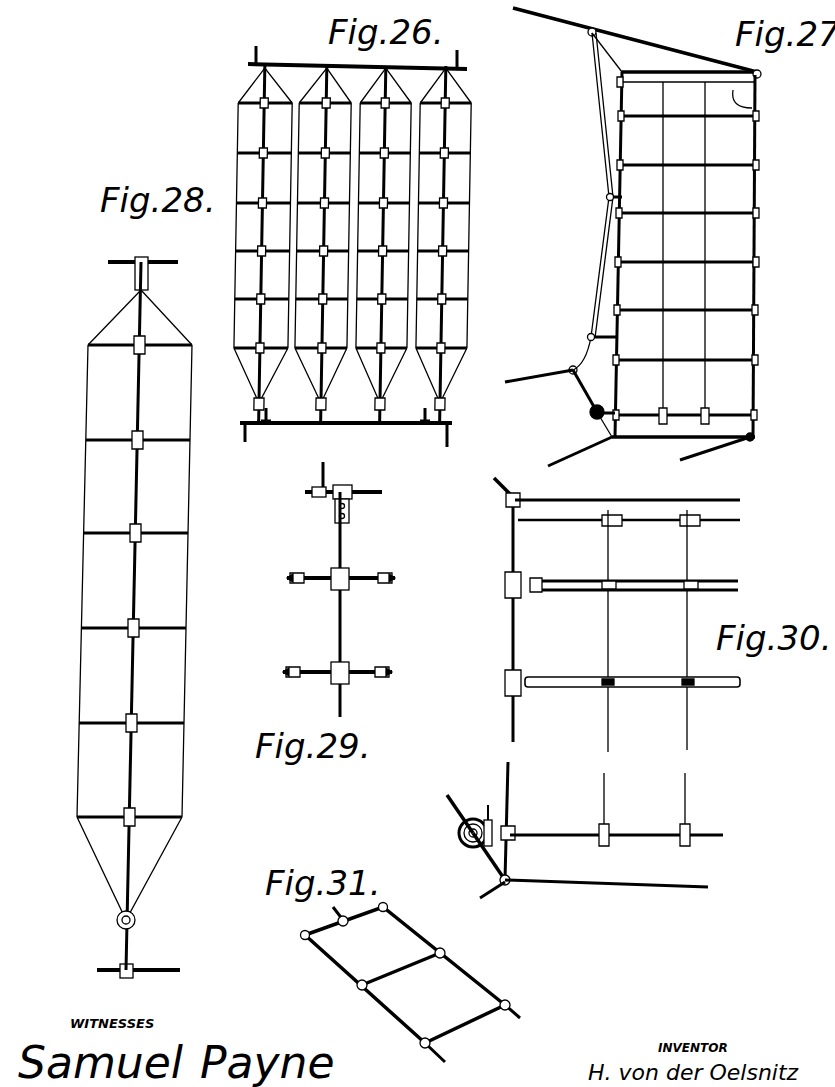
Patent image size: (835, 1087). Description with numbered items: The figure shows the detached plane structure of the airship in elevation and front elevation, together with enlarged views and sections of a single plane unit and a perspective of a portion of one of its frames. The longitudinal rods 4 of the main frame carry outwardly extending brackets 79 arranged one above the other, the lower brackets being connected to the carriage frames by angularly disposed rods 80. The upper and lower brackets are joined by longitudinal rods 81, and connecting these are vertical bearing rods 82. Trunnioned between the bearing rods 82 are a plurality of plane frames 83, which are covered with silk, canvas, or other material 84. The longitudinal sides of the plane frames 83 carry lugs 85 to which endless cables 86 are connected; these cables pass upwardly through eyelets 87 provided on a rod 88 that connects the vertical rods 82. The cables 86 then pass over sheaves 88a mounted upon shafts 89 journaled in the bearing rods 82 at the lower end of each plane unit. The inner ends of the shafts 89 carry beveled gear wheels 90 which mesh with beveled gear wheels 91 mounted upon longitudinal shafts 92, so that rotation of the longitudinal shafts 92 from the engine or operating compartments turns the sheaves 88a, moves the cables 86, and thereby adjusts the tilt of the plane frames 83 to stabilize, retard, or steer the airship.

In FIG. 27, the longitudinal rod 4 is at (588, 36).
In FIG. 27, the bracket 79 is at (633, 38).
In FIG. 29, the bracket 79 is at (318, 472).
In FIG. 30, the bracket 79 is at (496, 484).
In FIG. 26, the angularly disposed rod 80 is at (449, 436).
In FIG. 27, the angularly disposed rod 80 is at (560, 460).
In FIG. 26, the longitudinal rod 81 is at (386, 66).
In FIG. 27, the longitudinal rod 81 is at (762, 74).
In FIG. 28, the longitudinal rod 81 is at (122, 258).
In FIG. 29, the longitudinal rod 81 is at (343, 492).
In FIG. 26, the vertical bearing rod 82 is at (452, 180).
In FIG. 27, the vertical bearing rod 82 is at (757, 190).
In FIG. 28, the vertical bearing rod 82 is at (138, 380).
In FIG. 29, the vertical bearing rod 82 is at (336, 614).
In FIG. 30, the vertical bearing rod 82 is at (510, 612).
In FIG. 26, the plane frame 83 is at (452, 256).
In FIG. 27, the plane frame 83 is at (745, 262).
In FIG. 28, the plane frame 83 is at (90, 440).
In FIG. 29, the plane frame 83 is at (362, 584).
In FIG. 30, the plane frame 83 is at (568, 590).
In FIG. 31, the plane frame 83 is at (420, 932).
In FIG. 29, the covering material 84 is at (364, 574).
In FIG. 30, the covering material 84 is at (660, 590).
In FIG. 26, the lug 85 is at (455, 303).
In FIG. 27, the lug 85 is at (747, 302).
In FIG. 28, the lug 85 is at (88, 441).
In FIG. 29, the lug 85 is at (396, 582).
In FIG. 30, the lug 85 is at (606, 686).
In FIG. 31, the lug 85 is at (356, 992).
In FIG. 26, the endless cable 86 is at (422, 278).
In FIG. 27, the endless cable 86 is at (712, 228).
In FIG. 28, the endless cable 86 is at (83, 476).
In FIG. 30, the endless cable 86 is at (690, 737).
In FIG. 27, the eyelet 87 is at (713, 62).
In FIG. 29, the eyelet 87 is at (350, 507).
In FIG. 30, the eyelet 87 is at (612, 512).
In FIG. 27, the rod 88 is at (752, 108).
In FIG. 29, the rod 88 is at (334, 518).
In FIG. 30, the rod 88 is at (655, 522).
In FIG. 26, the sheave 88a is at (454, 404).
In FIG. 27, the sheave 88a is at (712, 412).
In FIG. 28, the sheave 88a is at (135, 928).
In FIG. 30, the sheave 88a is at (612, 830).
In FIG. 27, the shaft 89 is at (683, 410).
In FIG. 28, the shaft 89 is at (136, 921).
In FIG. 30, the shaft 89 is at (708, 836).
In FIG. 27, the beveled gear wheel 90 is at (600, 400).
In FIG. 30, the beveled gear wheel 90 is at (488, 806).
In FIG. 27, the beveled gear wheel 91 is at (586, 412).
In FIG. 30, the beveled gear wheel 91 is at (474, 844).
In FIG. 27, the longitudinal shaft 92 is at (592, 418).
In FIG. 30, the longitudinal shaft 92 is at (458, 834).